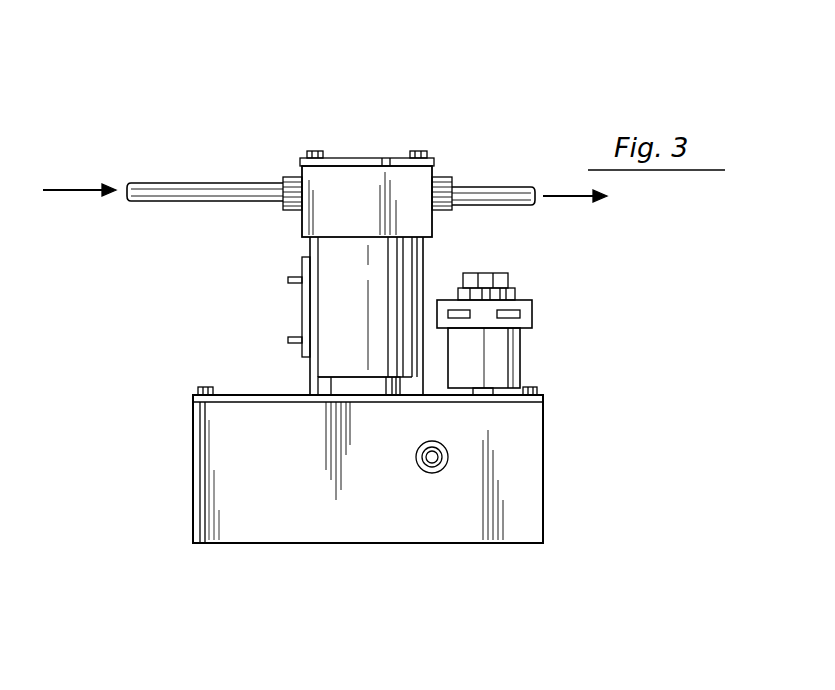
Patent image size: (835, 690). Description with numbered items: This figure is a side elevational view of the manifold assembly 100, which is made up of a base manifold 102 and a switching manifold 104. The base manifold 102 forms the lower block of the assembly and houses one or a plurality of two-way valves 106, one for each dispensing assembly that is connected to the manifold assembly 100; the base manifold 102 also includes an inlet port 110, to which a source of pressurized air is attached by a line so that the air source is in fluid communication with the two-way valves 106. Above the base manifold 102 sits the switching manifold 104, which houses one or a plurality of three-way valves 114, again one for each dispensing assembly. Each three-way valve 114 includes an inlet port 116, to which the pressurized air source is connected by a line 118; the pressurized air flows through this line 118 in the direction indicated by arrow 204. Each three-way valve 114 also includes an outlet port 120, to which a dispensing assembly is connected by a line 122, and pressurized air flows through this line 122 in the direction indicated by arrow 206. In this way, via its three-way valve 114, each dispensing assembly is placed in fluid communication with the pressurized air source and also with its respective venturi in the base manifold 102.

The manifold assembly 100 is at (157, 111).
The base manifold 102 is at (518, 450).
The switching manifold 104 is at (347, 195).
The two-way valve 106 is at (500, 352).
The inlet port 110 is at (436, 470).
The three-way valve 114 is at (355, 310).
The inlet port 116 is at (290, 177).
The line 118 is at (157, 201).
The outlet port 120 is at (442, 190).
The line 122 is at (505, 187).
The arrow 204 is at (72, 190).
The arrow 206 is at (563, 198).